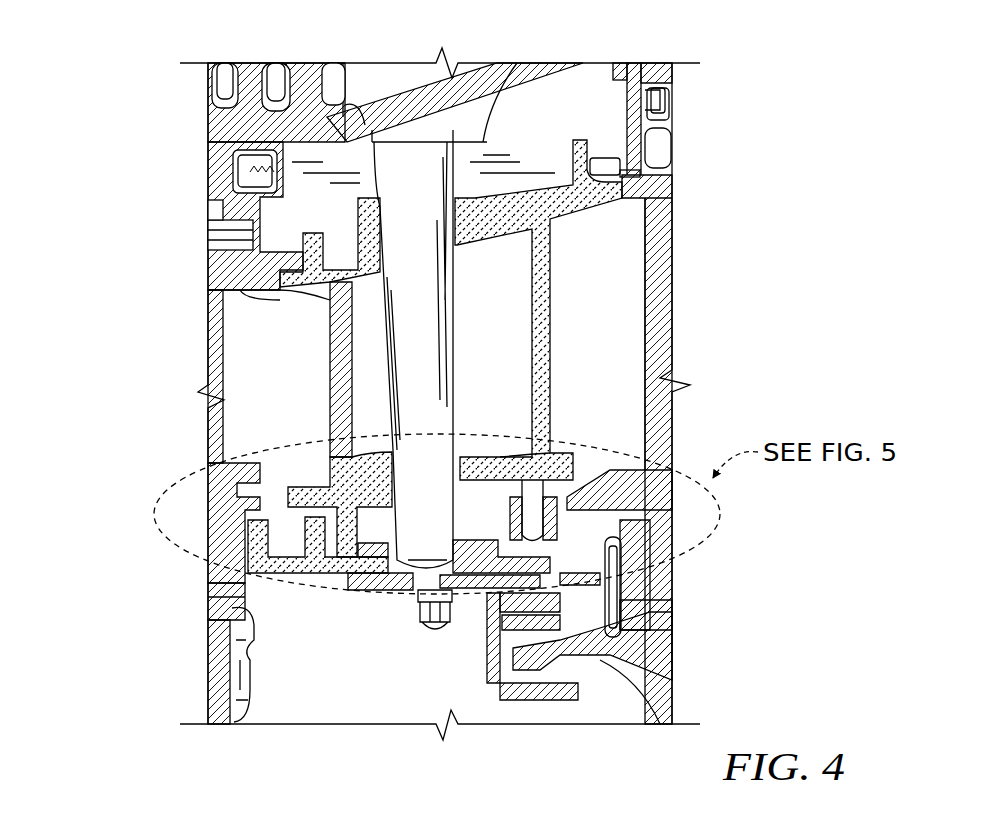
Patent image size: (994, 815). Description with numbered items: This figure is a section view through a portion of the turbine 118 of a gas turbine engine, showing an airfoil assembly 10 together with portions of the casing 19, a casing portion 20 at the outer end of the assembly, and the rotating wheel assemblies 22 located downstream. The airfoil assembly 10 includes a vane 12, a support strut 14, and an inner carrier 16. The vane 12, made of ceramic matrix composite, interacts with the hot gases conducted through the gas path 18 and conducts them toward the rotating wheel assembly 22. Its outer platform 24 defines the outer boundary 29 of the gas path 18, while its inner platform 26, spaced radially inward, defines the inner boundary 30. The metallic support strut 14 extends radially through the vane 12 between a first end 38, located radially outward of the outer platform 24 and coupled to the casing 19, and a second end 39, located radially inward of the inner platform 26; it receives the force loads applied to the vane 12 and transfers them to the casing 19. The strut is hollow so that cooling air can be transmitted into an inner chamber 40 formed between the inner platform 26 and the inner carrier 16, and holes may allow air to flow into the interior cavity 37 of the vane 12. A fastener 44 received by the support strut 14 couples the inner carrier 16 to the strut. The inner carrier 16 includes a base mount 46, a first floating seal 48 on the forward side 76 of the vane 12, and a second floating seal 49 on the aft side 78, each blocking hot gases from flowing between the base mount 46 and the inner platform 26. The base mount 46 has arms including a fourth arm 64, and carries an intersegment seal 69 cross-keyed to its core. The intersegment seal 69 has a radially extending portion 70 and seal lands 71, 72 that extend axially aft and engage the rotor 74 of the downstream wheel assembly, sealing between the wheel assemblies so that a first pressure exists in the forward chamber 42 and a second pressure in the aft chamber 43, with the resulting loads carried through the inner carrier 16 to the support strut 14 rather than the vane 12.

The turbine 118 is at (130, 80).
The airfoil assembly 10 is at (549, 162).
The vane 12 is at (557, 270).
The support strut 14 is at (407, 247).
The inner carrier 16 is at (275, 596).
The gas path 18 is at (299, 356).
The casing 19 is at (400, 90).
The turbine housing 20 is at (582, 90).
The rotating wheel assembly 22 is at (263, 673).
The outer platform 24 is at (600, 208).
The inner platform 26 is at (470, 513).
The outer boundary 29 is at (290, 300).
The inner boundary 30 is at (240, 465).
The interior cavity 37 is at (364, 157).
The first end 38 is at (462, 155).
The second end 39 is at (570, 440).
The inner chamber 40 is at (368, 512).
The forward chamber 42 is at (352, 692).
The aft chamber 43 is at (597, 604).
The fastener 44 is at (413, 623).
The base mount 46 is at (378, 598).
The first floating seal 48 is at (245, 533).
The second floating seal 49 is at (565, 518).
The fourth arm 64 is at (600, 560).
The intersegment seal 69 is at (485, 634).
The radially extending portion 70 is at (487, 668).
The seal land 71 is at (558, 600).
The seal land 72 is at (512, 702).
The rotor 74 is at (588, 662).
The forward side 76 is at (285, 373).
The aft side 78 is at (560, 368).